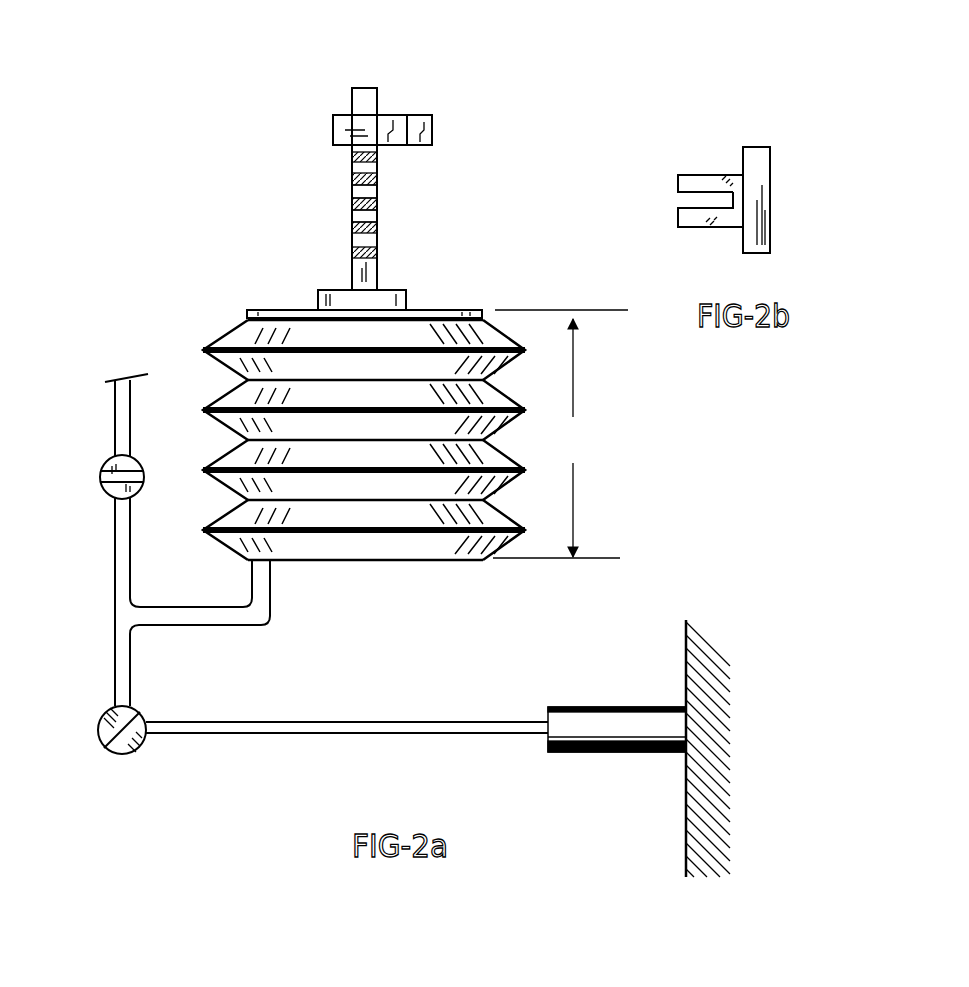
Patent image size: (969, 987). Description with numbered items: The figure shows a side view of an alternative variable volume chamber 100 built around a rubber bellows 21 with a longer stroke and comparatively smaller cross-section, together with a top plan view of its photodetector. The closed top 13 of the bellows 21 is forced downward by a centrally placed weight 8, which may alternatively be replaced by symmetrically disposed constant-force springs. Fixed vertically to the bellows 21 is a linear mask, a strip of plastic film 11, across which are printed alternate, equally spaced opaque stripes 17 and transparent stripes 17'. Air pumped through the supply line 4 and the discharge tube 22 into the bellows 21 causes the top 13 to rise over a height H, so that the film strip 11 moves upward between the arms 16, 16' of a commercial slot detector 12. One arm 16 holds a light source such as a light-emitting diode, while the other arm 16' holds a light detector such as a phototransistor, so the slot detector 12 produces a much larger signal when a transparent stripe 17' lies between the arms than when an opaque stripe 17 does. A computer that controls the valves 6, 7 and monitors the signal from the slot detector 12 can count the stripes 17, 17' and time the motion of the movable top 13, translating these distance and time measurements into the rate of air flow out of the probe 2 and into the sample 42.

In FIG. 2A, the bellows assembly 100 is at (160, 352).
In FIG. 2A, the rubber bellows 21 is at (517, 397).
In FIG. 2A, the top 13 is at (463, 309).
In FIG. 2A, the weight 8 is at (340, 300).
In FIG. 2A, the film strip 11 is at (370, 280).
In FIG. 2A, the opaque stripe 17 is at (293, 196).
In FIG. 2A, the transparent stripe 17' is at (274, 197).
In FIG. 2A, the arm 16 is at (322, 103).
In FIG. 2B, the arm 16 is at (672, 250).
In FIG. 2B, the arm 16' is at (656, 159).
In FIG. 2A, the slot detector 12 is at (427, 115).
In FIG. 2B, the slot detector 12 is at (763, 147).
In FIG. 2A, the bellows height H is at (560, 434).
In FIG. 2A, the supply line 4 is at (133, 423).
In FIG. 2A, the valve 7 is at (117, 463).
In FIG. 2A, the discharge tube 22 is at (222, 618).
In FIG. 2A, the valve 6 is at (107, 717).
In FIG. 2A, the probe 2 is at (615, 725).
In FIG. 2A, the sample 42 is at (698, 648).